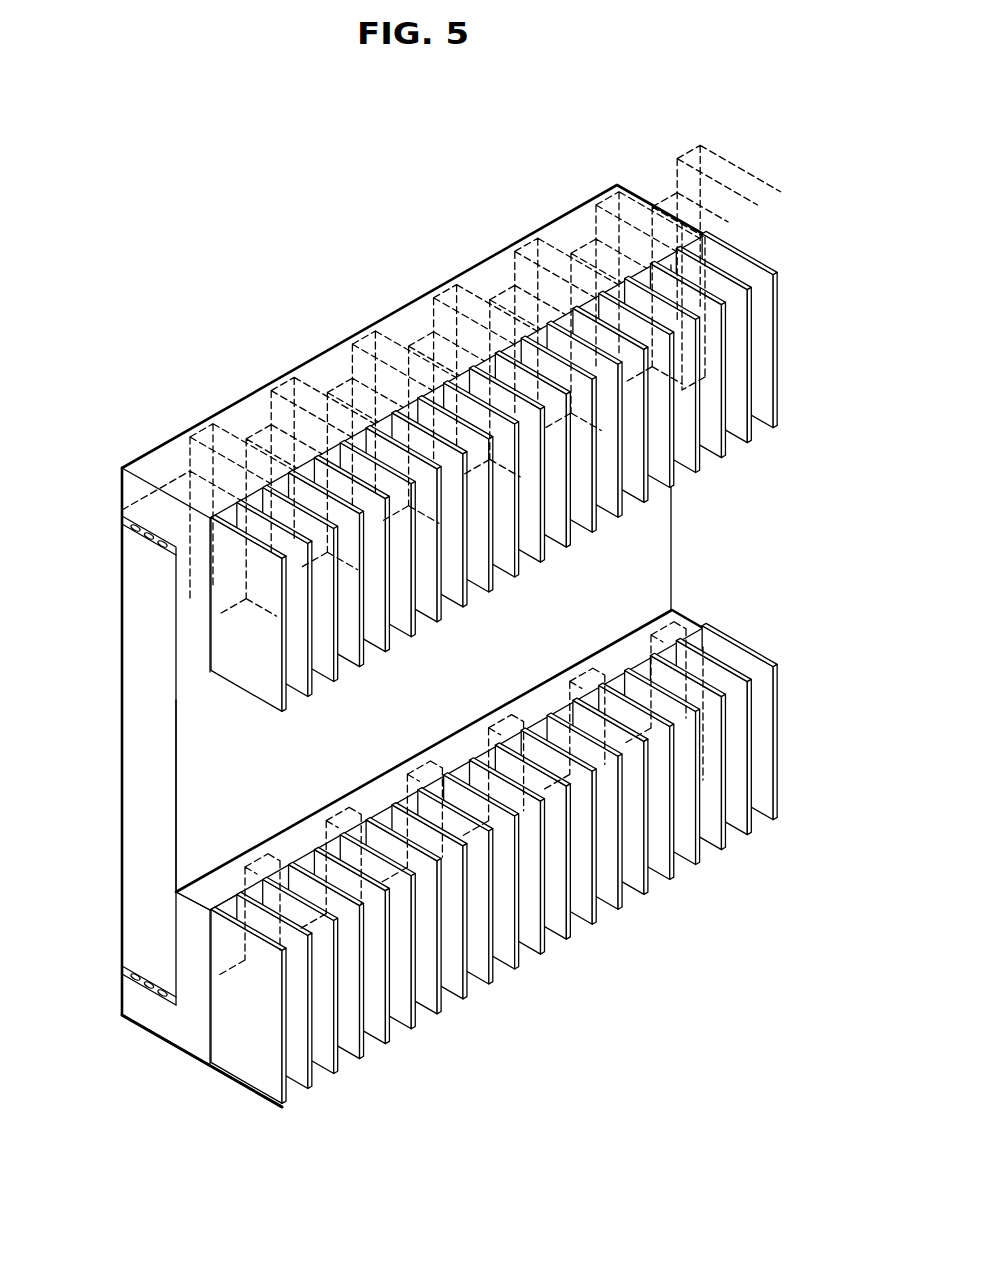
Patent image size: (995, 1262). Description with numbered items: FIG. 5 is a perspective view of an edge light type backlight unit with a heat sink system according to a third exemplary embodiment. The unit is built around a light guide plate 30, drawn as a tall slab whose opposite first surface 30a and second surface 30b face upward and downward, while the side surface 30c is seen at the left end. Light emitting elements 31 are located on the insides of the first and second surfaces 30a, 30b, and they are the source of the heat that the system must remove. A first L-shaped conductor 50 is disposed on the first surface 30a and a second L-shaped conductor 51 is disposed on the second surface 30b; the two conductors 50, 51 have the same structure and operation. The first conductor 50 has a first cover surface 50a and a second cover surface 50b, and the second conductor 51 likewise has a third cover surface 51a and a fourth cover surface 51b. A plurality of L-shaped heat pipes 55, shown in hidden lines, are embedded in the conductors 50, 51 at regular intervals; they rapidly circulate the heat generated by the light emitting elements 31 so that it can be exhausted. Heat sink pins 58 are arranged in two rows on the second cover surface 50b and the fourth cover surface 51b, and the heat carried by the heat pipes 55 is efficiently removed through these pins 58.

The light guide plate 30 is at (150, 650).
The first surface 30a is at (125, 513).
The second surface 30b is at (148, 1018).
The side surface of base plate 30c is at (202, 772).
The light emitting element 31 is at (140, 530).
The first conductor 50 is at (127, 490).
The first cover surface 50a is at (145, 477).
The second cover surface 50b is at (205, 577).
The second conductor 51 is at (160, 1040).
The third cover surface 51a is at (178, 1058).
The fourth cover surface 51b is at (218, 1078).
The heat pipe 55 is at (212, 437).
The heat sink pin 58 is at (247, 672).